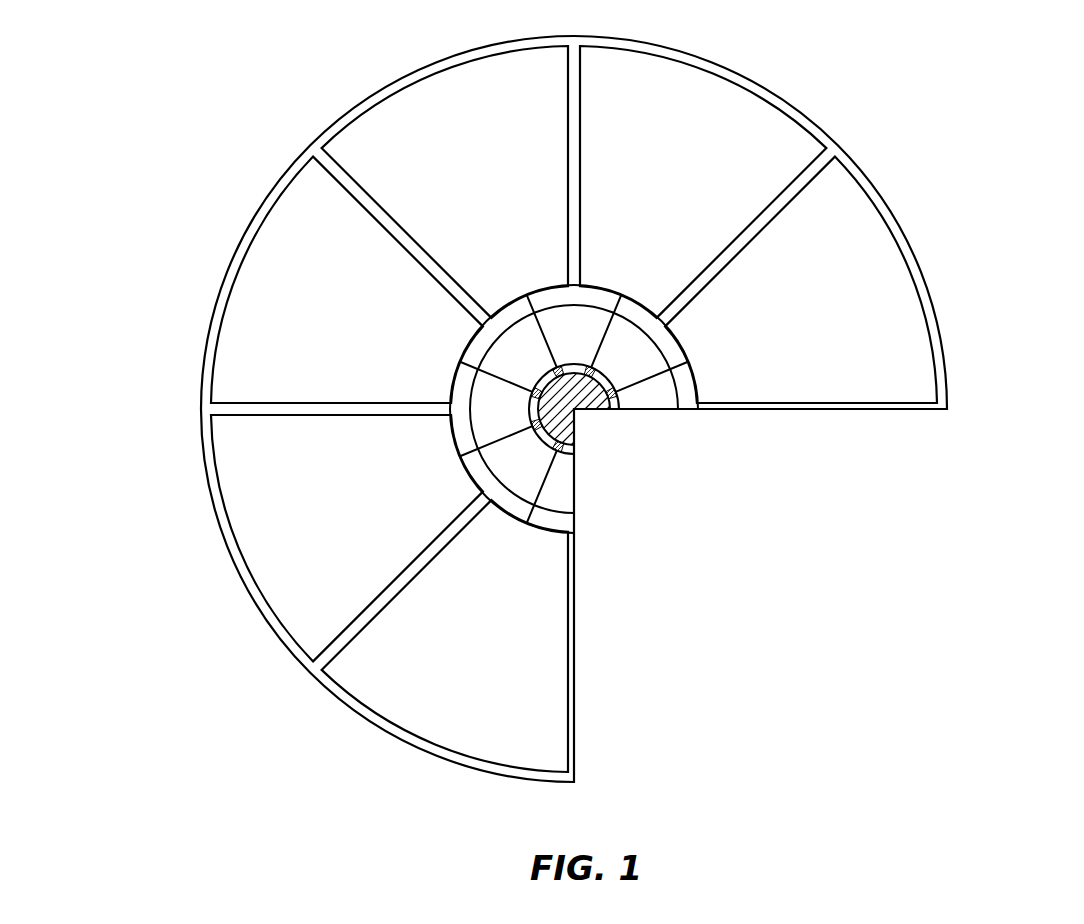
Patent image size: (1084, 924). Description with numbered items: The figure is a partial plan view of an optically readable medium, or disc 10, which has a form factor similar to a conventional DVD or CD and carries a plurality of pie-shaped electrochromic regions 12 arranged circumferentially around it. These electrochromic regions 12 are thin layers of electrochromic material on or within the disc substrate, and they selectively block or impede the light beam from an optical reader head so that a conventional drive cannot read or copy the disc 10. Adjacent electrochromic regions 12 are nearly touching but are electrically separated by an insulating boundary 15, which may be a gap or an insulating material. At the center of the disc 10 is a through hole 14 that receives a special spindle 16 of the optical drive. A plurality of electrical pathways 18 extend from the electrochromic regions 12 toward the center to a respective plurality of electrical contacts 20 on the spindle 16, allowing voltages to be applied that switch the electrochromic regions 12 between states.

The optically readable medium 10 is at (150, 82).
The electrochromic region 12 is at (715, 150).
The through hole 14 is at (511, 413).
The insulating boundary 15 is at (383, 227).
The spindle 16 is at (581, 403).
The electrical pathway 18 is at (617, 307).
The electrical contact 20 is at (591, 367).